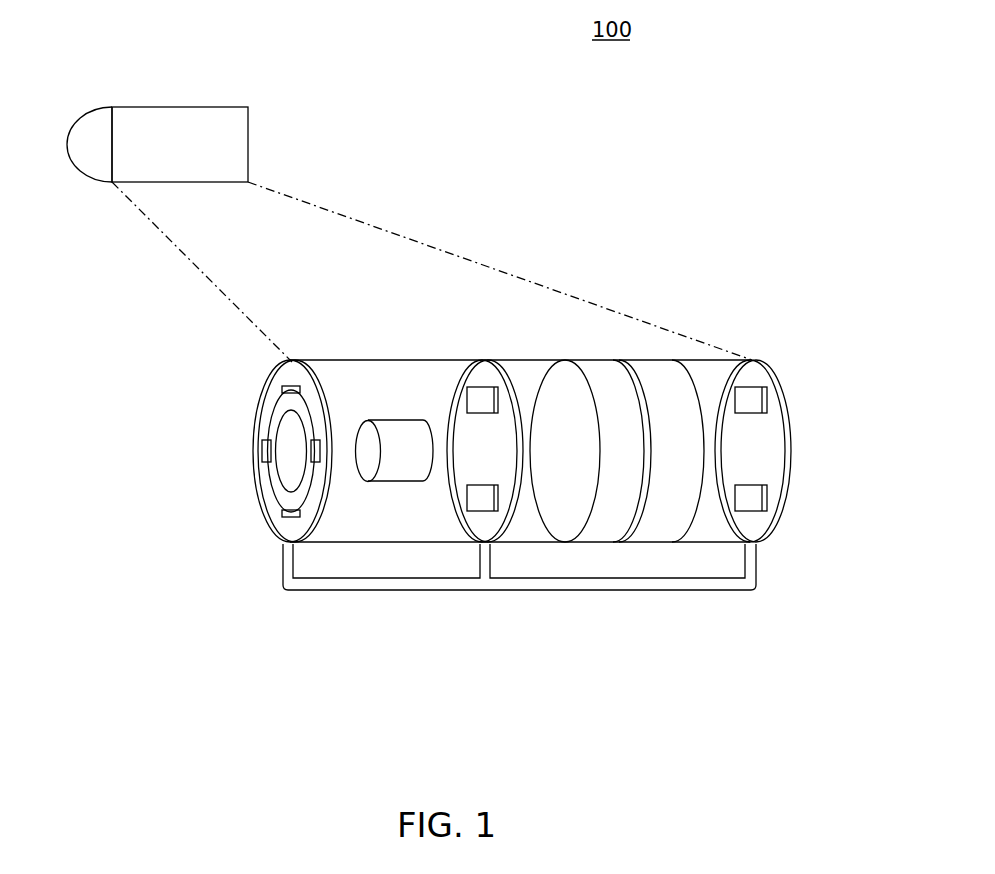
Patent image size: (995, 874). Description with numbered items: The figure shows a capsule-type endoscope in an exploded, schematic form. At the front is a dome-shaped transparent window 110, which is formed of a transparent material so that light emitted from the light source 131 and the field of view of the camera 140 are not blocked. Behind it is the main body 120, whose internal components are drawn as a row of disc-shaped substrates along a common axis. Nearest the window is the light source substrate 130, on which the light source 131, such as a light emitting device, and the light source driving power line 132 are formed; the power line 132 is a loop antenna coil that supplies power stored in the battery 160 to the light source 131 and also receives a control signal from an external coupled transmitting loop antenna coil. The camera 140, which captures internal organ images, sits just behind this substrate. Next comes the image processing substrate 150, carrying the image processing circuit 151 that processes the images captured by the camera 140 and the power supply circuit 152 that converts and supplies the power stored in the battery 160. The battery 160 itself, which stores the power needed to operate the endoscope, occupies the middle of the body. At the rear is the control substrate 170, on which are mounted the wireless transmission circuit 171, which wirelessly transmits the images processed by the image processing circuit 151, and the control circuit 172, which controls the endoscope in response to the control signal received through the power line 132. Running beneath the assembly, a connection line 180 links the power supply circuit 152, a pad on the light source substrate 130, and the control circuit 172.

The transparent window 110 is at (84, 112).
The main body 120 is at (217, 112).
The light source substrate 130 is at (291, 362).
The light source 131 is at (287, 518).
The light source driving power line 132 is at (270, 416).
The camera 140 is at (380, 368).
The image processing substrate 150 is at (482, 365).
The image processing circuit 151 is at (470, 404).
The power supply circuit 152 is at (473, 500).
The battery 160 is at (620, 362).
The control substrate 170 is at (757, 365).
The wireless transmission circuit 171 is at (764, 400).
The control circuit 172 is at (757, 500).
The connection line 180 is at (673, 582).